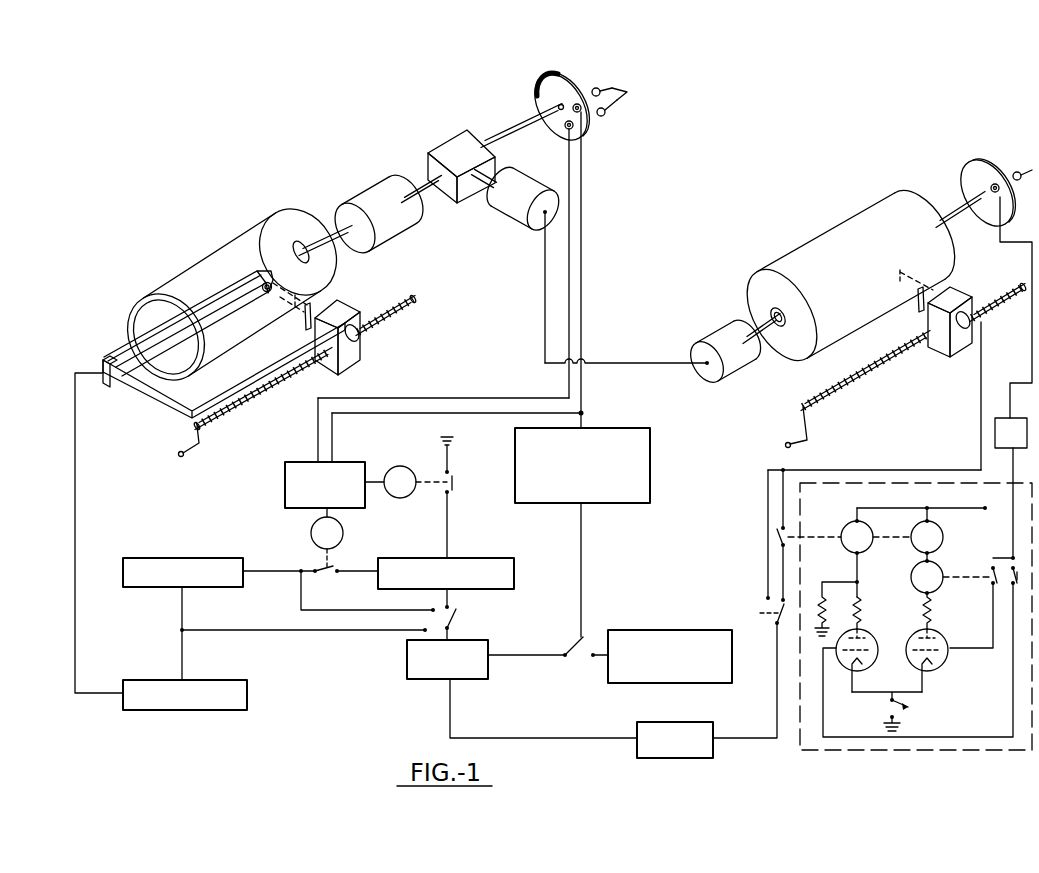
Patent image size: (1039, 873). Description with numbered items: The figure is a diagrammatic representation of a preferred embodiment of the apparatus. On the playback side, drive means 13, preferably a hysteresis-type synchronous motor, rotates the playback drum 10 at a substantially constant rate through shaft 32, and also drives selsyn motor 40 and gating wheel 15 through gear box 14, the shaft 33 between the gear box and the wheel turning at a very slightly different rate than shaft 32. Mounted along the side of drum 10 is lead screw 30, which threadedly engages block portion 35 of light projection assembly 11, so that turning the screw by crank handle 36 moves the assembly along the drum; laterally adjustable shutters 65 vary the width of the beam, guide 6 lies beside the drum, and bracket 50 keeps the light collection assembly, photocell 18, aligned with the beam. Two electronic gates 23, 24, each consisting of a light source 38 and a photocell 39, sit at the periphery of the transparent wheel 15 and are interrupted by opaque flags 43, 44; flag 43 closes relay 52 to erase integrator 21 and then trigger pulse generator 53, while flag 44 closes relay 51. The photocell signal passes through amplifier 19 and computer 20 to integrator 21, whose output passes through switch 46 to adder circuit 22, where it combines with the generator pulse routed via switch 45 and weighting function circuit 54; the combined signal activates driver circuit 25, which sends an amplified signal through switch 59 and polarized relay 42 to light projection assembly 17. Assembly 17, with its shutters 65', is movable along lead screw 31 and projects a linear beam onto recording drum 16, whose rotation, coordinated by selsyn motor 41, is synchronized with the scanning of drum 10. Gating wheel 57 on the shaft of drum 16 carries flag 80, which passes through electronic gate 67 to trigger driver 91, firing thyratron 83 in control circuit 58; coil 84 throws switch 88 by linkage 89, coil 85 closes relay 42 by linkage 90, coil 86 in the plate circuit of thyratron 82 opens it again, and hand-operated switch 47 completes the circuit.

The playback drum 10 is at (190, 268).
The guide rail 6 is at (190, 329).
The photocell (light collection assembly) 18 is at (262, 272).
The shutters 65 is at (274, 310).
The crank handle 36 is at (314, 306).
The bracket 50 is at (141, 390).
The lead screw 30 is at (267, 392).
The block portion 35 is at (363, 346).
The light projection assembly 11 is at (365, 306).
The shaft 32 is at (333, 232).
The drive means 13 is at (365, 186).
The gear box 14 is at (445, 147).
The shaft 33 is at (520, 121).
The gating wheel 15 is at (548, 78).
The opaque flag 43 is at (562, 80).
The opaque flag 44 is at (535, 106).
The electronic gate 24 is at (592, 126).
The photocell 39 is at (565, 128).
The electronic gate 23 is at (585, 95).
The light source 38 is at (621, 100).
The selsyn motor 40 is at (500, 215).
The selsyn motor 41 is at (710, 335).
The recording drum 16 is at (810, 245).
The gating wheel 57 is at (958, 180).
The flag 80 is at (982, 172).
The electronic gate 67 is at (1017, 172).
The driver 91 is at (1007, 418).
The light projection assembly 17 is at (937, 292).
The shutters 65' is at (901, 306).
The lead screw 31 is at (880, 378).
The pulse generator 53 is at (620, 428).
The relay 52 is at (409, 497).
The relay 51 is at (331, 485).
The computer 20 is at (198, 558).
The integrator 21 is at (485, 558).
The switch 46 is at (457, 620).
The adder circuit 22 is at (470, 679).
The switch 45 is at (575, 648).
The weighting function circuit 54 is at (662, 630).
The amplifier 19 is at (215, 680).
The driver circuit 25 is at (680, 722).
The switch 59 is at (760, 585).
The polarized relay 42 is at (780, 537).
The control circuit 58 is at (905, 750).
The coil 86 is at (844, 572).
The coil 85 is at (908, 534).
The coil 84 is at (950, 594).
The linkage 90 is at (808, 537).
The switch 88 is at (1008, 556).
The linkage 89 is at (966, 590).
The thyratron 82 is at (866, 634).
The thyratron 83 is at (938, 634).
The hand-operated switch 47 is at (905, 712).